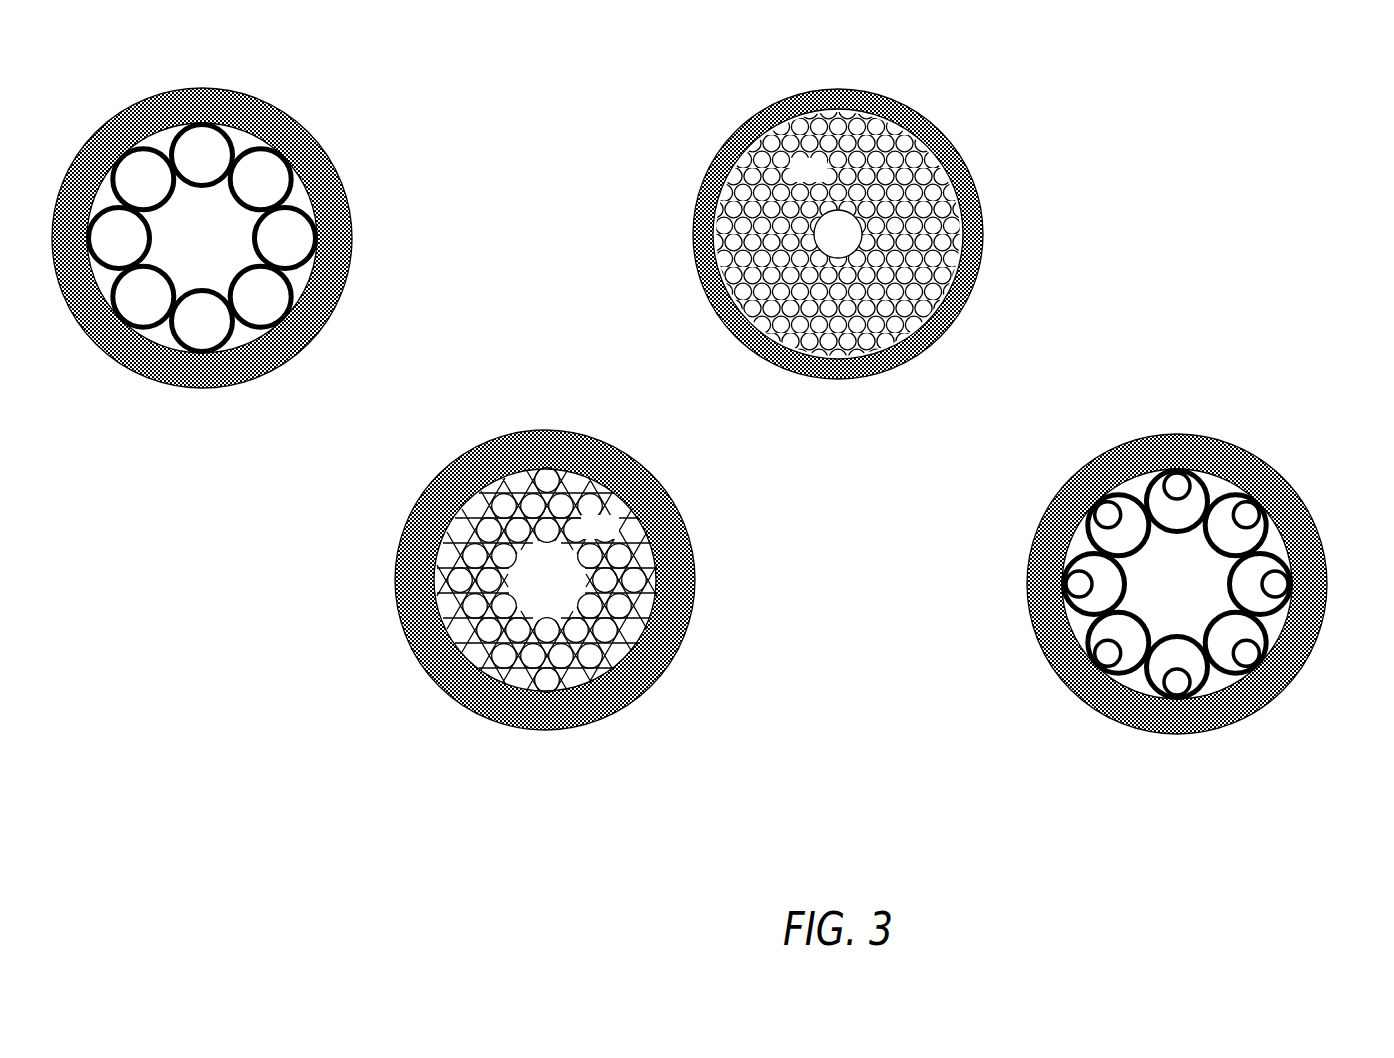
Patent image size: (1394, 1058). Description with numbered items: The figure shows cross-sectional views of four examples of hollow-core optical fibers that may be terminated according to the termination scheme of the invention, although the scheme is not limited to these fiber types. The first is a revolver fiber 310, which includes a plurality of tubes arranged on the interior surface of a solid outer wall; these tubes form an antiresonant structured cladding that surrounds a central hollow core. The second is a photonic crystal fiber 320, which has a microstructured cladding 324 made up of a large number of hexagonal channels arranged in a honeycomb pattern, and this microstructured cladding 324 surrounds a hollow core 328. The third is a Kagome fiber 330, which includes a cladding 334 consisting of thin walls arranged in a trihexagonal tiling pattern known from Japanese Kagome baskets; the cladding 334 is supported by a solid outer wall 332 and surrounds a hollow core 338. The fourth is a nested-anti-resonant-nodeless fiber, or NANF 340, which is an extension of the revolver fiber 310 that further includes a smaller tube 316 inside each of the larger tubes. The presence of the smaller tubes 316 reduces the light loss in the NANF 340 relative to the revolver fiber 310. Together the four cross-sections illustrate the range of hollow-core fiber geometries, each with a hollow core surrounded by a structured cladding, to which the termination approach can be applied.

The revolver fiber 310 is at (96, 84).
The smaller tube 316 is at (1217, 503).
The photonic crystal fiber 320 is at (718, 83).
The microstructured cladding 324 is at (826, 181).
The hollow core 328 is at (856, 247).
The Kagome fiber 330 is at (420, 438).
The solid outer wall 332 is at (633, 456).
The cladding 334 is at (598, 502).
The hollow core 338 is at (563, 592).
The nested-anti-resonant-nodeless fiber 340 is at (1067, 435).